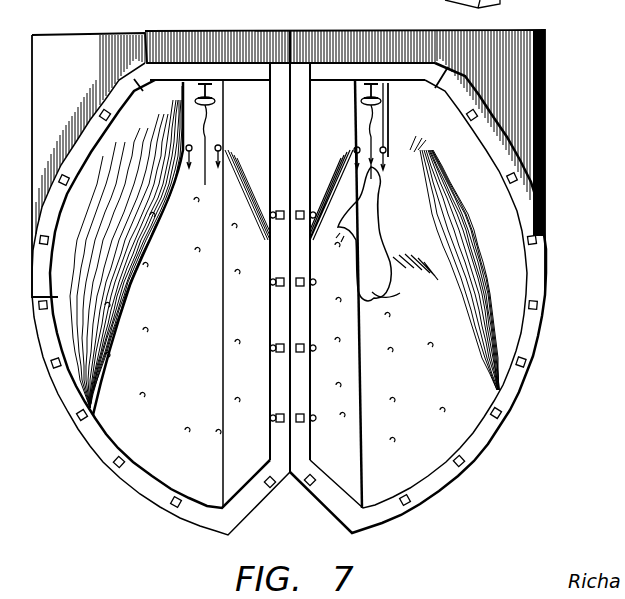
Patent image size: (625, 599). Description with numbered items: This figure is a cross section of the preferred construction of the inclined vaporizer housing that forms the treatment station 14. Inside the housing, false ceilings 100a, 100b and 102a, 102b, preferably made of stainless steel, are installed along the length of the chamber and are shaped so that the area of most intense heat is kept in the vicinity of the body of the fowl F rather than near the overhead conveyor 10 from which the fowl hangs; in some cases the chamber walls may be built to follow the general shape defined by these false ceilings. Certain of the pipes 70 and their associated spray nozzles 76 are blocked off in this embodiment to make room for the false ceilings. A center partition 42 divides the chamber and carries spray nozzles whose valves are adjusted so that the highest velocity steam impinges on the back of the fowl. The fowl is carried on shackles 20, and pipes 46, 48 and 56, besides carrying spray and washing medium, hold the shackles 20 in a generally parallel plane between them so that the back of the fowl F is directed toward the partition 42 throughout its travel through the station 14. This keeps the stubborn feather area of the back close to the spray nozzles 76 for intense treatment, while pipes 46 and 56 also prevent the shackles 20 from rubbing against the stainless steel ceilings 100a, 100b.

The overhead conveyor 10 is at (200, 97).
The station 14 is at (579, 167).
The shackles 20 is at (203, 148).
The center partition 42 is at (285, 373).
The pipe 46 is at (386, 151).
The pipe 48 is at (221, 146).
The pipe 56 is at (183, 140).
The pipes 70 is at (106, 110).
The spray nozzles 76 is at (189, 367).
The false ceiling 100a is at (455, 257).
The false ceiling 100b is at (127, 263).
The false ceiling 102a is at (325, 217).
The false ceiling 102b is at (253, 217).
The fowl F is at (392, 254).